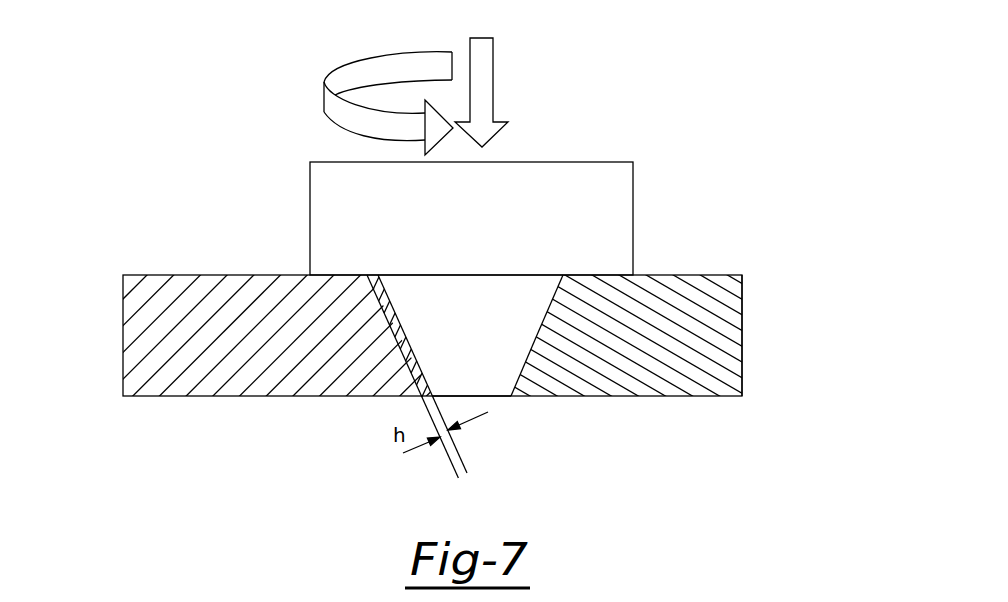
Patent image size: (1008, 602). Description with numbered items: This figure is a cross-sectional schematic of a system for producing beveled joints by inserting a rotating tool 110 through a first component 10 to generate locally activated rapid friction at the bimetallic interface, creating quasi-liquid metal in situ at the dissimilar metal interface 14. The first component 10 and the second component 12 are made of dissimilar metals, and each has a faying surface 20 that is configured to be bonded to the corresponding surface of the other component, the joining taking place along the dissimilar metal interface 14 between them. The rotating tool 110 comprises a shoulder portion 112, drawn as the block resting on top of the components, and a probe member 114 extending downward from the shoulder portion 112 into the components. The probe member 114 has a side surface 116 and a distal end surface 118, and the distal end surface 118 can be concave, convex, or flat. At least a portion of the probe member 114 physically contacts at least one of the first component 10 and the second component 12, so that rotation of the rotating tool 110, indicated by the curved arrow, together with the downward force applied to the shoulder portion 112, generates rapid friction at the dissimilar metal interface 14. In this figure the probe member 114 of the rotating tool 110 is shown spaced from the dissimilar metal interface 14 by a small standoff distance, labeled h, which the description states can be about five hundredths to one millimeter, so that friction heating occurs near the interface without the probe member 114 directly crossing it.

The first component 10 is at (162, 274).
The second component 12 is at (740, 274).
The dissimilar metal interface 14 is at (402, 357).
The faying surface 20 is at (370, 287).
The rotating tool 110 is at (599, 121).
The shoulder portion 112 is at (633, 187).
The probe member 114 is at (558, 291).
The side surface 116 is at (520, 372).
The distal end surface 118 is at (502, 397).